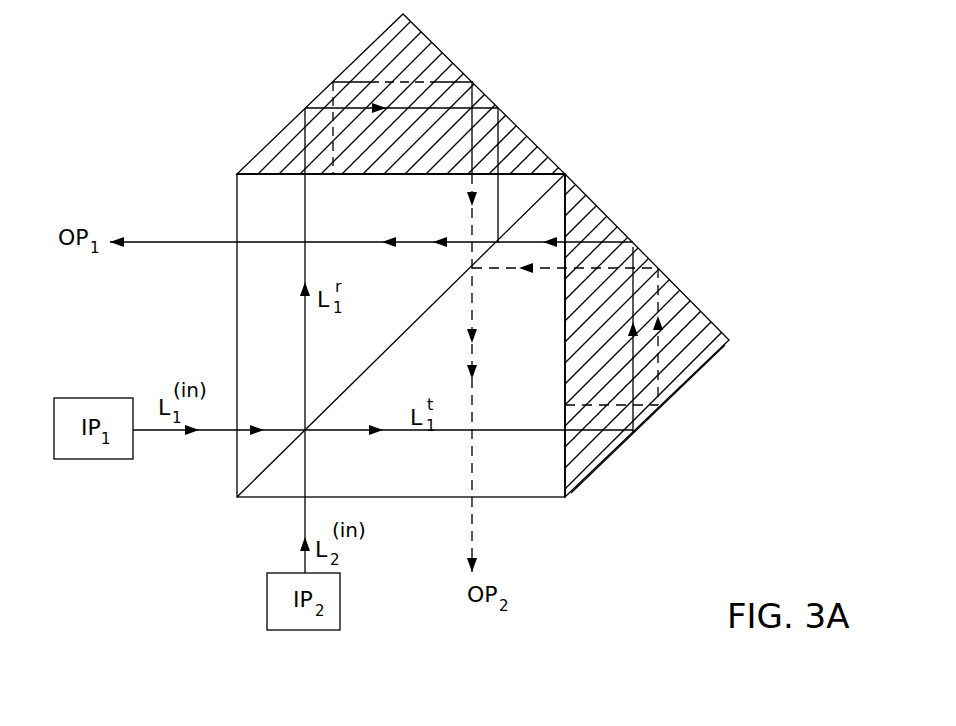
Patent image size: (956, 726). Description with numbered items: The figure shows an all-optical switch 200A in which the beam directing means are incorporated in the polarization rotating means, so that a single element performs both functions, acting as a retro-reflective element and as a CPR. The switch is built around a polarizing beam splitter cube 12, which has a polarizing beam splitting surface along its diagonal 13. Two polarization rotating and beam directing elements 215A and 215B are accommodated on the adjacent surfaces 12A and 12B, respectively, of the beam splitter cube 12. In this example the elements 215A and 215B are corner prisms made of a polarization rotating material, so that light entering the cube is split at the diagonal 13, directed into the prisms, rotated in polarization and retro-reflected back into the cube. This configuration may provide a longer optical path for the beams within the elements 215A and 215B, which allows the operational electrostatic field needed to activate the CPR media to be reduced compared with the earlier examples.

The all-optical switch 200A is at (476, 250).
The polarizing beam splitter cube 12 is at (456, 311).
The surface of the beam splitter cube 12A is at (527, 172).
The surface of the beam splitter cube 12B is at (565, 343).
The diagonal 13 is at (262, 468).
The polarization rotating and beam directing element 215A is at (373, 42).
The polarization rotating and beam directing element 215B is at (700, 323).